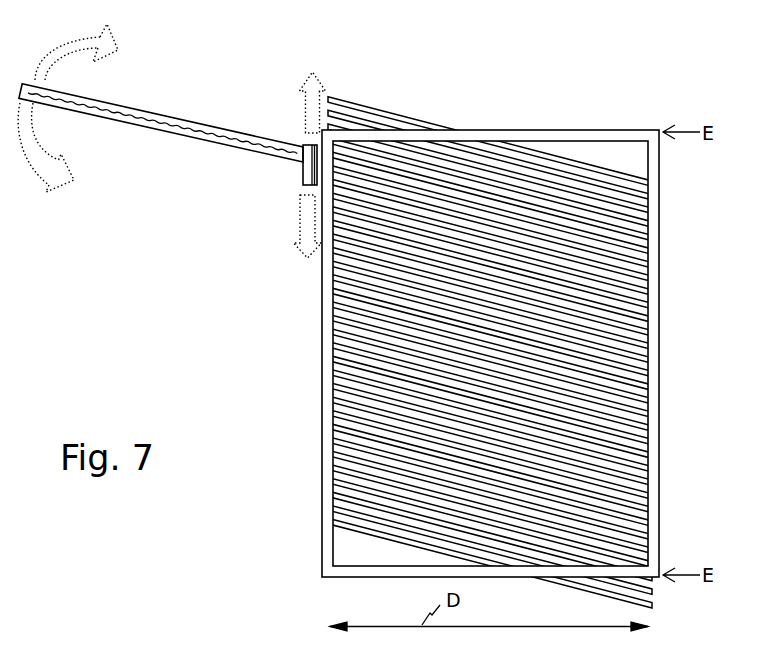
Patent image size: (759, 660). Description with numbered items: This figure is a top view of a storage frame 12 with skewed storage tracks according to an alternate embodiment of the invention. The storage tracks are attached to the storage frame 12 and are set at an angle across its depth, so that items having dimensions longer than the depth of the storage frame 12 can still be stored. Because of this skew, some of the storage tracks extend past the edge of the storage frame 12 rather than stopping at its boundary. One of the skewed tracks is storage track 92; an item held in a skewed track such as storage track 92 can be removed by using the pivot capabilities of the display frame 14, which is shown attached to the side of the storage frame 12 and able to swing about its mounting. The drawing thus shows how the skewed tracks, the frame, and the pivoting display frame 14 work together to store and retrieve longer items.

The storage frame 12 is at (656, 160).
The display frame 14 is at (148, 112).
The storage track 92 is at (648, 375).